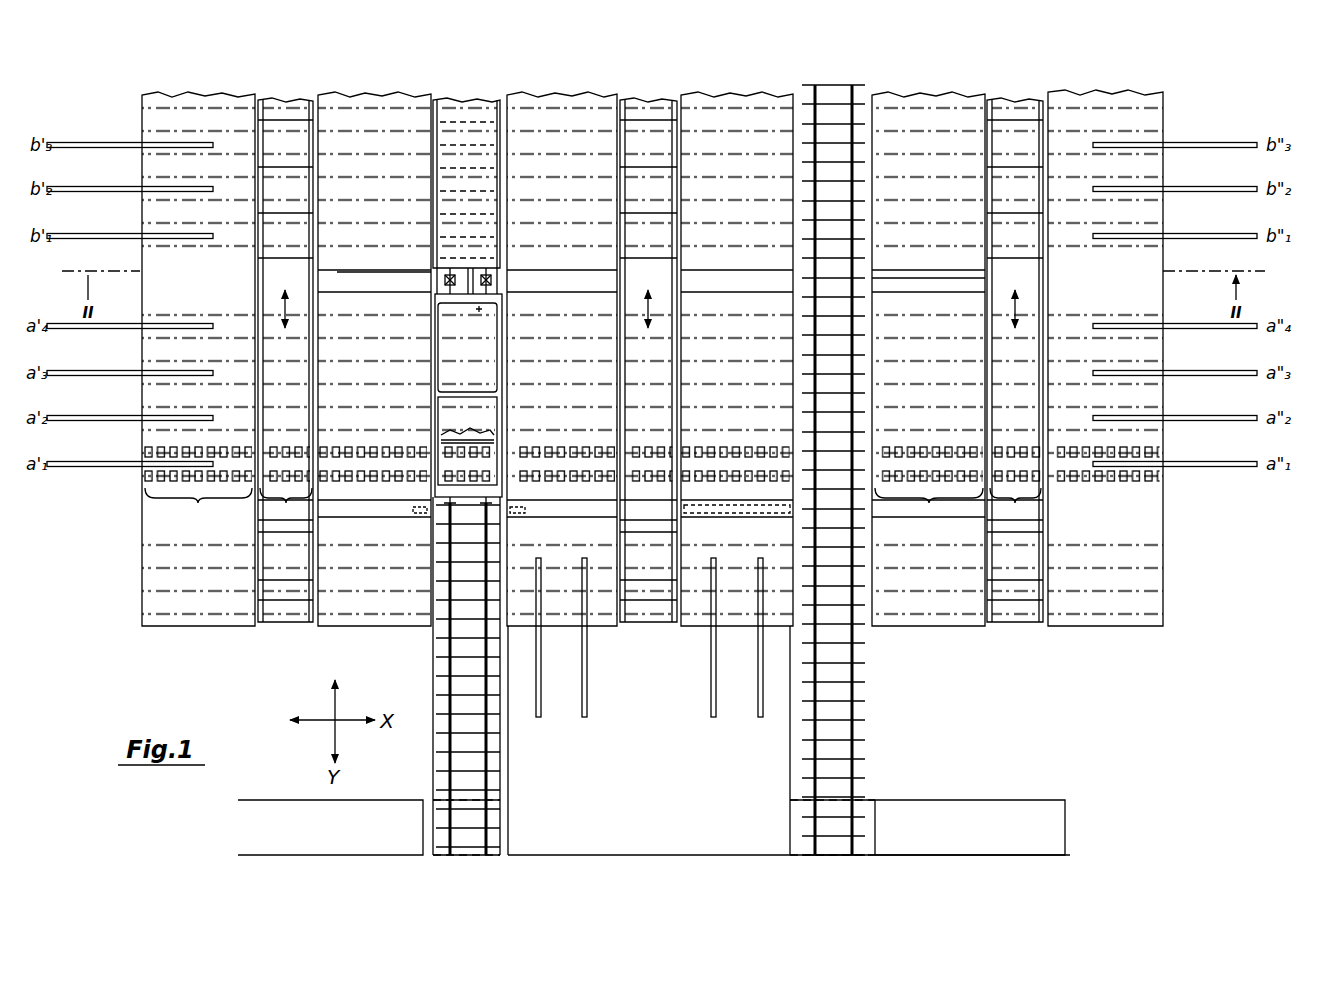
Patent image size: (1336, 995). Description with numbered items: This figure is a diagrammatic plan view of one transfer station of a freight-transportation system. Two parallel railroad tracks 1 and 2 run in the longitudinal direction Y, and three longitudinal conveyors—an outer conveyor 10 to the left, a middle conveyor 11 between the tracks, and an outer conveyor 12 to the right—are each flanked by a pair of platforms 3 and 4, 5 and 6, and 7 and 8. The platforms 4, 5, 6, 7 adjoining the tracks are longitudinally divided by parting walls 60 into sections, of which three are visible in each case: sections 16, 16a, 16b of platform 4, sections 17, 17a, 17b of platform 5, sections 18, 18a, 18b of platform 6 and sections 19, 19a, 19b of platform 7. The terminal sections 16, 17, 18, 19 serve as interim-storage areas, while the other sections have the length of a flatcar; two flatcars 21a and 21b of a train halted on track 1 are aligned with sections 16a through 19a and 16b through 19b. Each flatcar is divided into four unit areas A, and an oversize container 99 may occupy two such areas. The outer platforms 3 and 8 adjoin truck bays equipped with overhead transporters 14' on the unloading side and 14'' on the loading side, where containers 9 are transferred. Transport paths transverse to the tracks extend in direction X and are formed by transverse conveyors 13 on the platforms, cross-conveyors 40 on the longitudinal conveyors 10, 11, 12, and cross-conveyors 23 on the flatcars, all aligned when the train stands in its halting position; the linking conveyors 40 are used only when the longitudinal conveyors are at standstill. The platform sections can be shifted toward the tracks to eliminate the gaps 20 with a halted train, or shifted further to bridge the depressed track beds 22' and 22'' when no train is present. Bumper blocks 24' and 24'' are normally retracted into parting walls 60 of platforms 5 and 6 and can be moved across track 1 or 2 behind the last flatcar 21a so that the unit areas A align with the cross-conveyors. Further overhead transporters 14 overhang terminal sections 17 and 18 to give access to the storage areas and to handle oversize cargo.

The railroad track 1 is at (475, 742).
The railroad track 2 is at (828, 740).
The outer platform 3 is at (185, 632).
The platform 4 is at (372, 632).
The platform 5 is at (600, 632).
The platform 6 is at (690, 632).
The platform 7 is at (935, 632).
The outer platform 8 is at (1107, 632).
The container 9 is at (497, 410).
The outer longitudinal conveyor 10 is at (280, 630).
The middle longitudinal conveyor 11 is at (652, 632).
The outer longitudinal conveyor 12 is at (1018, 632).
The transverse conveyor 13 is at (1185, 508).
The overhead transporter 14 is at (649, 637).
The overhead transporter 14' is at (130, 305).
The overhead transporter 14'' is at (1175, 305).
The terminal section of platform 4 16 is at (355, 545).
The section of platform 4 16a is at (360, 387).
The section of platform 4 16b is at (360, 204).
The terminal section of platform 5 17 is at (544, 545).
The section of platform 5 17a is at (549, 387).
The section of platform 5 17b is at (549, 204).
The terminal section of platform 6 18 is at (717, 545).
The section of platform 6 18a is at (709, 387).
The section of platform 6 18b is at (729, 204).
The terminal section of platform 7 19 is at (907, 545).
The section of platform 7 19a is at (914, 387).
The section of platform 7 19b is at (914, 204).
The gap 20 is at (503, 333).
The flatcar 21a is at (492, 491).
The flatcar 21b is at (488, 241).
The depressed track bed 22' is at (376, 578).
The depressed track bed 22'' is at (927, 578).
The cross-conveyor 23 is at (487, 175).
The bumper block 24' is at (454, 497).
The bumper block 24'' is at (713, 512).
The cross-conveyor 40 is at (1040, 648).
The parting wall 60 is at (337, 272).
The oversize container 99 is at (494, 313).
The unit area A is at (447, 236).